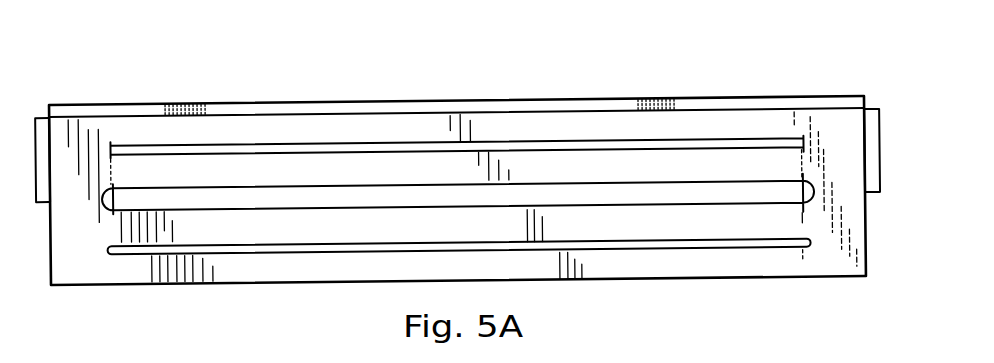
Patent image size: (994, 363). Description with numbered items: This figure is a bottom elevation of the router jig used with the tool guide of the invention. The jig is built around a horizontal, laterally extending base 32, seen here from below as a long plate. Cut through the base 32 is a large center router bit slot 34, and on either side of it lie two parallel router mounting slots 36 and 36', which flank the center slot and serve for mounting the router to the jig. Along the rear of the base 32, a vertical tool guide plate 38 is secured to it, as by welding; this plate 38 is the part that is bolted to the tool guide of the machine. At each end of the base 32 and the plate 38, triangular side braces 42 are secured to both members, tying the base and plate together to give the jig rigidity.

The base 32 is at (738, 262).
The center router bit slot 34 is at (537, 190).
The router mounting slot 36 is at (456, 104).
The router mounting slot 36' is at (459, 281).
The vertical tool guide plate 38 is at (742, 103).
The triangular side brace 42 is at (46, 143).